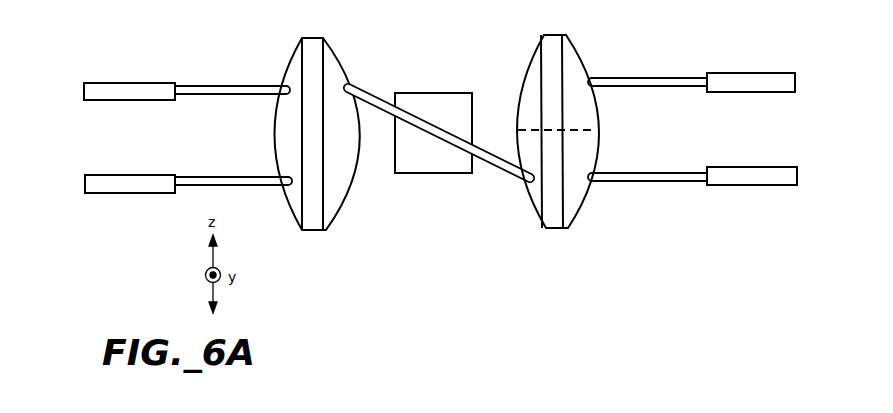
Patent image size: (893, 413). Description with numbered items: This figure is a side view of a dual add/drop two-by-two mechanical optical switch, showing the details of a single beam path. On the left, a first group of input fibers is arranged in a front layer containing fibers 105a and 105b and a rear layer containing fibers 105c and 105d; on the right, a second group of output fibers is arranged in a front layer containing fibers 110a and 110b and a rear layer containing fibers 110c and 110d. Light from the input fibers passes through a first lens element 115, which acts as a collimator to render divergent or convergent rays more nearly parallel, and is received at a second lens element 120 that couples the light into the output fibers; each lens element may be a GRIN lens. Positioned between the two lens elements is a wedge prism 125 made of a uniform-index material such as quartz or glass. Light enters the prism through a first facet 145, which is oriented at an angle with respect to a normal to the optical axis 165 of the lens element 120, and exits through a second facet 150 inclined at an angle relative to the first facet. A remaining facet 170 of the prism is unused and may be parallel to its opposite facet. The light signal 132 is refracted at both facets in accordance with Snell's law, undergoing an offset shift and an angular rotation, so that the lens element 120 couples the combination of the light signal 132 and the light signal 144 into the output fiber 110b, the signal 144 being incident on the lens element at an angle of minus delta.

The input fiber 105a is at (166, 88).
The input fiber 105b is at (147, 187).
The input fiber 105c is at (147, 95).
The input fiber 105d is at (167, 182).
The output fiber 110a is at (719, 80).
The output fiber 110b is at (721, 174).
The output fiber 110c is at (763, 70).
The output fiber 110d is at (763, 163).
The first lens element 115 is at (313, 42).
The second lens element 120 is at (583, 117).
The wedge prism 125 is at (421, 157).
The light signal 132 is at (439, 128).
The light signal 144 is at (520, 168).
The first facet 145 is at (383, 97).
The second facet 150 is at (480, 97).
The optical axis 165 is at (575, 128).
The remaining facet 170 is at (395, 182).